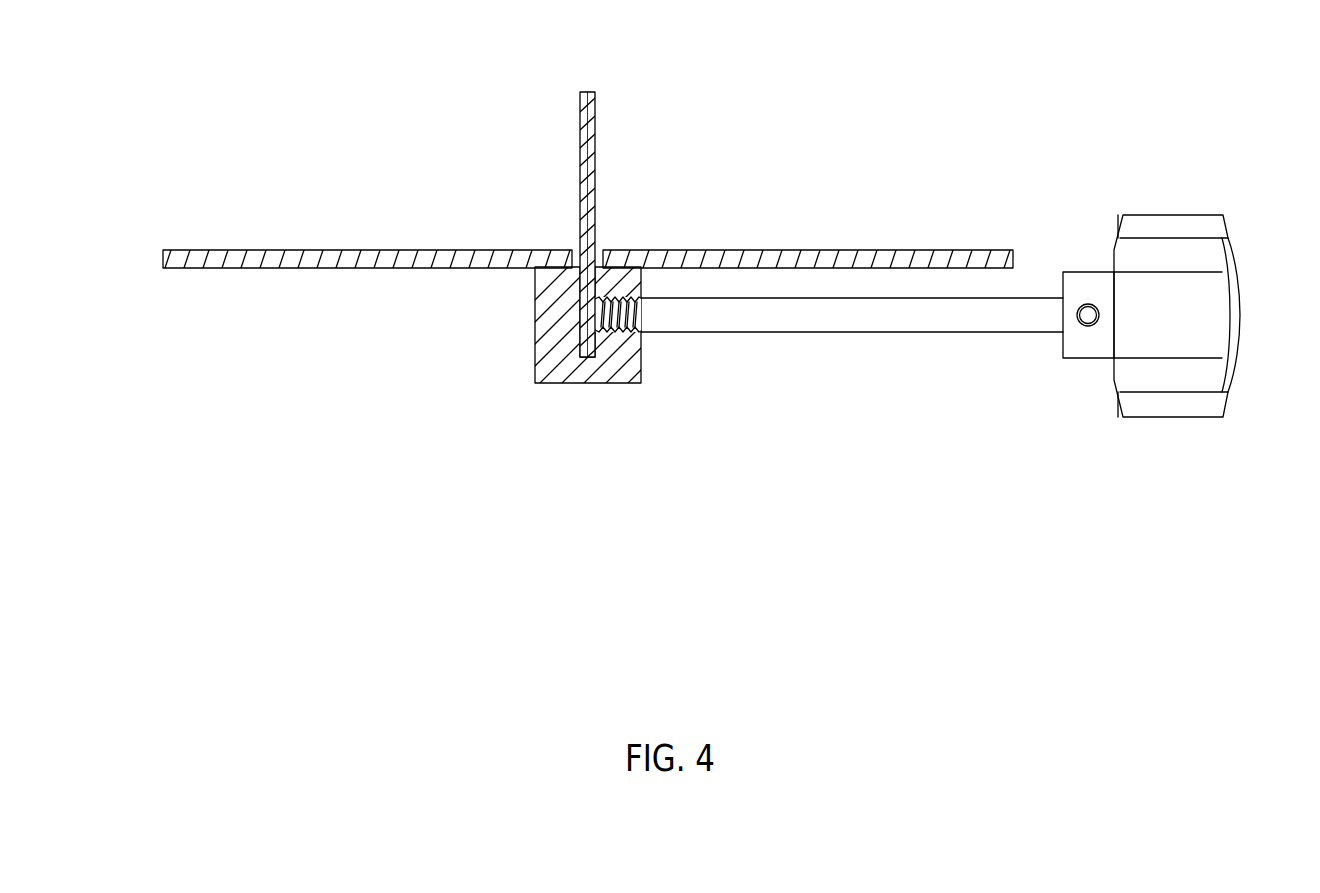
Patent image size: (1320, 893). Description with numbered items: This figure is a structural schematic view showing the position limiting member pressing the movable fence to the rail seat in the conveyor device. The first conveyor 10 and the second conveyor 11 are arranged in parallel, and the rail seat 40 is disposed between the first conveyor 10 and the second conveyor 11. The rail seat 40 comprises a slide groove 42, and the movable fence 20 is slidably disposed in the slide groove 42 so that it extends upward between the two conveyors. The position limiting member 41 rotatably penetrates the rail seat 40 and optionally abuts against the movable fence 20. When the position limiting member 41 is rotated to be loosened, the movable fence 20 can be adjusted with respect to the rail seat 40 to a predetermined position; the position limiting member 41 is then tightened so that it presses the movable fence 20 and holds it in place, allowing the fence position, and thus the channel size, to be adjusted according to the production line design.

The first conveyor 10 is at (332, 262).
The second conveyor 11 is at (843, 260).
The movable fence 20 is at (588, 150).
The rail seat 40 is at (616, 365).
The position limiting member 41 is at (833, 315).
The slide groove 42 is at (586, 356).